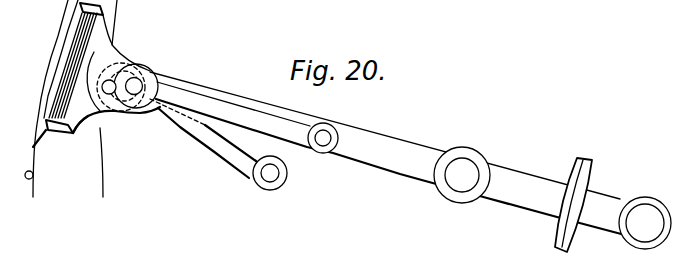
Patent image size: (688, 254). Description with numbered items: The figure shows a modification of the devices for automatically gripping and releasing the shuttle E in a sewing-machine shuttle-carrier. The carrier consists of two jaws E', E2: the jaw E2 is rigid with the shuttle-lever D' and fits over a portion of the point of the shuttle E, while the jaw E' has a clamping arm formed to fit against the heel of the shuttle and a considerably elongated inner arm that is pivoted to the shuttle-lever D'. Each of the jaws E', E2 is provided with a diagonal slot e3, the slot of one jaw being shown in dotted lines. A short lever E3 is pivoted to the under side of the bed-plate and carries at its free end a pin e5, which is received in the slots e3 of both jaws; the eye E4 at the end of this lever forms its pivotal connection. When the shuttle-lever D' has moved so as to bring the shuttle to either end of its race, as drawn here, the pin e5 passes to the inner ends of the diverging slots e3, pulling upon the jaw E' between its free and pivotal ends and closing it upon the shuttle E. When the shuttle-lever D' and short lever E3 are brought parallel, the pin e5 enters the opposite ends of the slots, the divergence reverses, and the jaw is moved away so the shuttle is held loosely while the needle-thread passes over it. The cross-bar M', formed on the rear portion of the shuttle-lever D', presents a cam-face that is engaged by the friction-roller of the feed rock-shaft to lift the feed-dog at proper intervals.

The shuttle E is at (74, 68).
The jaw E' is at (92, 98).
The jaw E2 is at (79, 124).
The short lever E3 is at (209, 150).
The link eye E4 is at (281, 182).
The diagonal slot e3 is at (137, 63).
The pin e5 is at (142, 83).
The shuttle-lever D' is at (410, 160).
The cross-bar M' is at (584, 205).